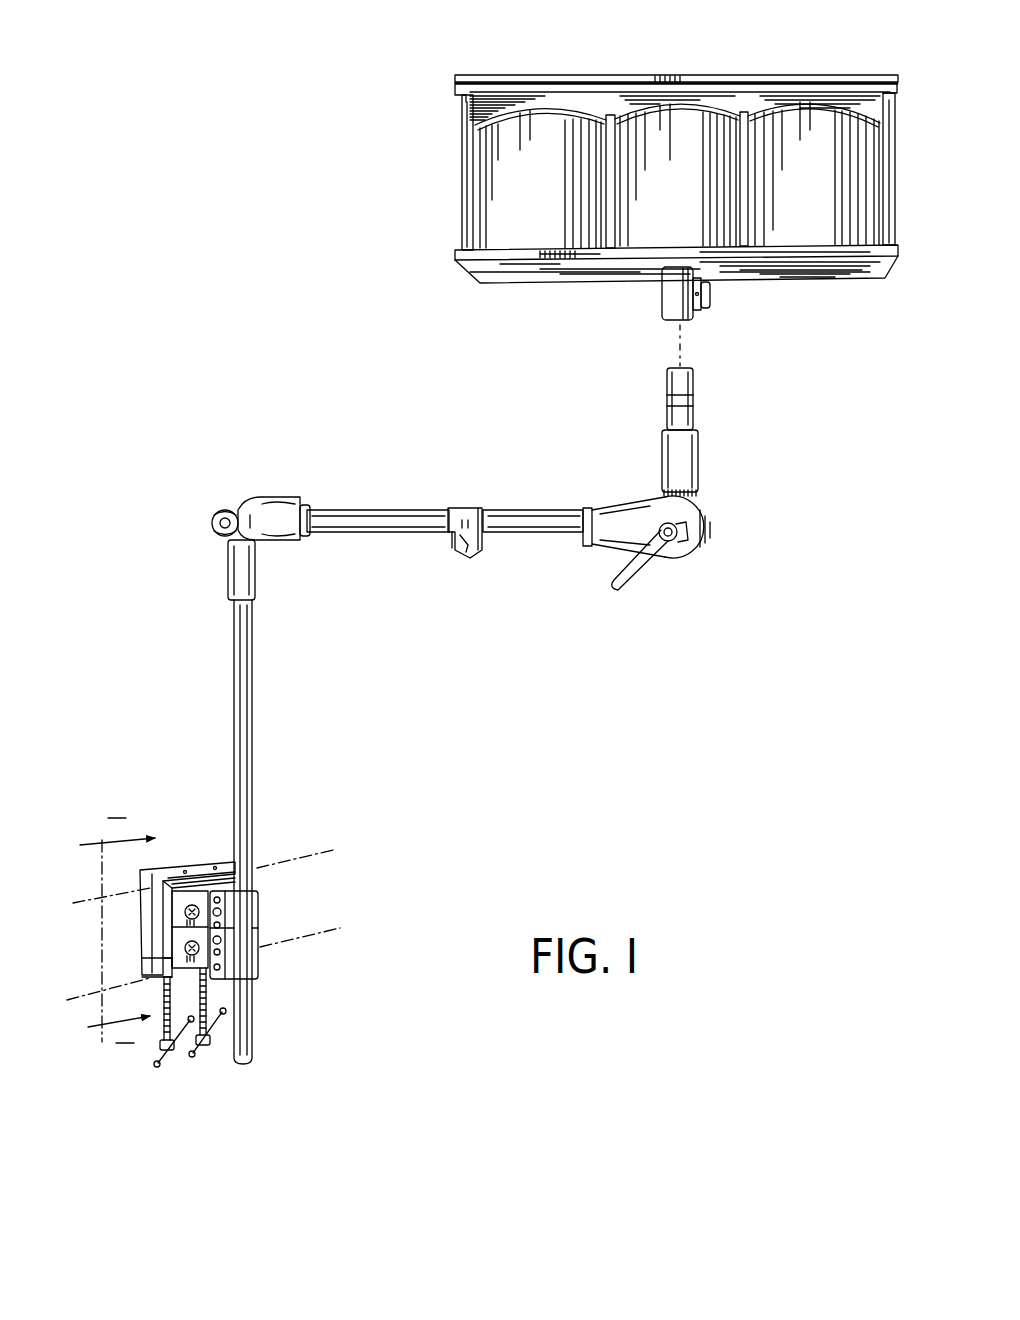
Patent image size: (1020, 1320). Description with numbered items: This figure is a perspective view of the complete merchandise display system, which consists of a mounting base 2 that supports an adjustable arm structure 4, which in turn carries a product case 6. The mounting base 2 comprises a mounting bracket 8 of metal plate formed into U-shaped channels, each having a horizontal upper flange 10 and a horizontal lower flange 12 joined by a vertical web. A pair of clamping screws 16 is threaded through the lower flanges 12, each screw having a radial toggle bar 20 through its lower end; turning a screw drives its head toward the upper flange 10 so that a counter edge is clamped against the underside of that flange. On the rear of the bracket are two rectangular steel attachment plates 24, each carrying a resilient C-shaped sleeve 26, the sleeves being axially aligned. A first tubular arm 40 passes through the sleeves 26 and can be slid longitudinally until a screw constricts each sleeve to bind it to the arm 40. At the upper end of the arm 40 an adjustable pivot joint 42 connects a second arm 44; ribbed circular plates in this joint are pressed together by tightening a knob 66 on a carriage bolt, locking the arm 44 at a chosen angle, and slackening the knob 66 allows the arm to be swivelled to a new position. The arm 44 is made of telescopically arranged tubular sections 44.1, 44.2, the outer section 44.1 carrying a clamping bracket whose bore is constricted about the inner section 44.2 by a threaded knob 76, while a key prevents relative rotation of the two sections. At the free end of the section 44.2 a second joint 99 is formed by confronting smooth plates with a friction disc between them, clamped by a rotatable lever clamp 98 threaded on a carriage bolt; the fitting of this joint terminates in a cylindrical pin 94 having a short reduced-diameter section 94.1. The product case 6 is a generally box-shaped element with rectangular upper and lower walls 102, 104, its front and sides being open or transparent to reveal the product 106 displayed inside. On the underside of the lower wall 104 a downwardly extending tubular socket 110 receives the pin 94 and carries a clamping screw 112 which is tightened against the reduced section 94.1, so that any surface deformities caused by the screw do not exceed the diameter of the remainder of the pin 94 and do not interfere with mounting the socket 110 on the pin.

The mounting base 2 is at (86, 896).
The adjustable arm structure 4 is at (236, 458).
The product case 6 is at (437, 233).
The mounting bracket 8 is at (200, 874).
The upper flange 10 is at (170, 866).
The lower flange 12 is at (150, 973).
The clamping screws 16 is at (158, 1027).
The radial toggle bar 20 is at (217, 1024).
The attachment plates 24 is at (180, 945).
The sleeve 26 is at (247, 917).
The first tubular arm 40 is at (240, 692).
The adjustable pivot joint 42 is at (260, 541).
The second arm 44 is at (475, 497).
The outer tubular arm section 44.1 is at (404, 521).
The inner tubular arm section 44.2 is at (553, 520).
The knob 66 is at (218, 521).
The threaded knob 76 is at (466, 550).
The cylindrical pin 94 is at (683, 393).
The reduced-diameter section 94.1 is at (683, 407).
The rotatable lever clamp 98 is at (632, 578).
The pivot joint 99 is at (700, 545).
The upper wall 102 is at (603, 73).
The lower wall 104 is at (502, 277).
The product 106 is at (527, 167).
The tubular socket 110 is at (665, 298).
The clamping screw 112 is at (708, 292).